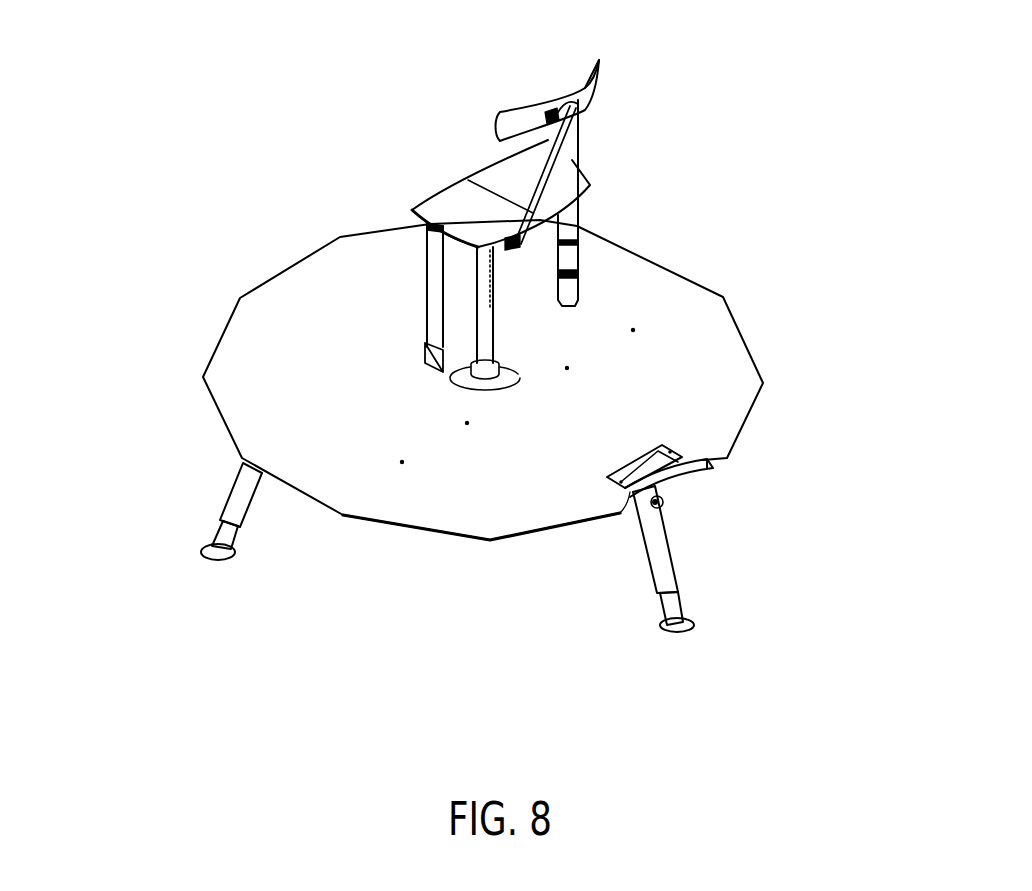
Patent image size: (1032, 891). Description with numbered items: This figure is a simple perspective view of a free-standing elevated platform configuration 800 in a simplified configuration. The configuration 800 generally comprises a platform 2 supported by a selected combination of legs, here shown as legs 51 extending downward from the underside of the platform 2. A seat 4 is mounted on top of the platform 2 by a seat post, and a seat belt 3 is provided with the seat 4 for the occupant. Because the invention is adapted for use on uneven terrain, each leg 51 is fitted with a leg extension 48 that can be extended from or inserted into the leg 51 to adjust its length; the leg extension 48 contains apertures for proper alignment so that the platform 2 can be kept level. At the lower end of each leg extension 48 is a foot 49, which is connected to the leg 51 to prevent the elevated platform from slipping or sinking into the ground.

The elevated platform configuration 800 is at (663, 210).
The platform 2 is at (350, 393).
The seat belt 3 is at (425, 343).
The seat 4 is at (470, 215).
The leg 51 is at (245, 497).
The leg extension 48 is at (233, 553).
The foot 49 is at (215, 557).